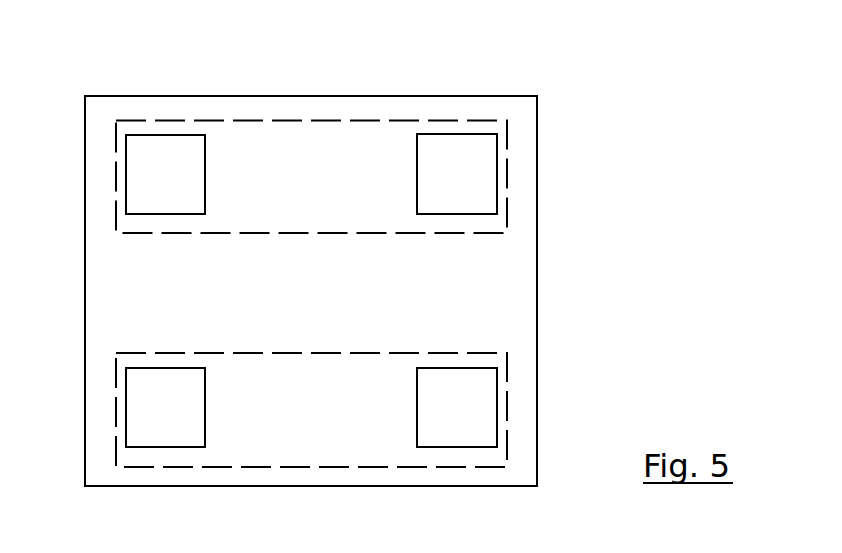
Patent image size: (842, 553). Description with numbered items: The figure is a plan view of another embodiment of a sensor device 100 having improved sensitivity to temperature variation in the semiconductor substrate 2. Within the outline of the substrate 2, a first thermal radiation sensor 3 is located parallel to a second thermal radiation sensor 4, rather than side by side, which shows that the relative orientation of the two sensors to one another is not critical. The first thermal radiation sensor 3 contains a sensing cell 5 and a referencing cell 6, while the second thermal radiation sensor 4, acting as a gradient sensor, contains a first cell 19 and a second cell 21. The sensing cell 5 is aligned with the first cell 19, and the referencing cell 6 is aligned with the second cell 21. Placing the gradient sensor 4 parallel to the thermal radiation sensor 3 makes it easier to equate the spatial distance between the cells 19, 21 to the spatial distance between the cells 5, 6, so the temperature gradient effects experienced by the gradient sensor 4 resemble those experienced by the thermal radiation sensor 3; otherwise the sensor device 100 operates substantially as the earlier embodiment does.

The sensor device 100 is at (624, 88).
The semiconductor substrate 2 is at (505, 282).
The first thermal radiation sensor 3 is at (507, 133).
The second thermal radiation sensor 4 is at (507, 367).
The sensing cell 5 is at (141, 175).
The referencing cell 6 is at (480, 173).
The first cell 19 is at (141, 408).
The second cell 21 is at (480, 407).